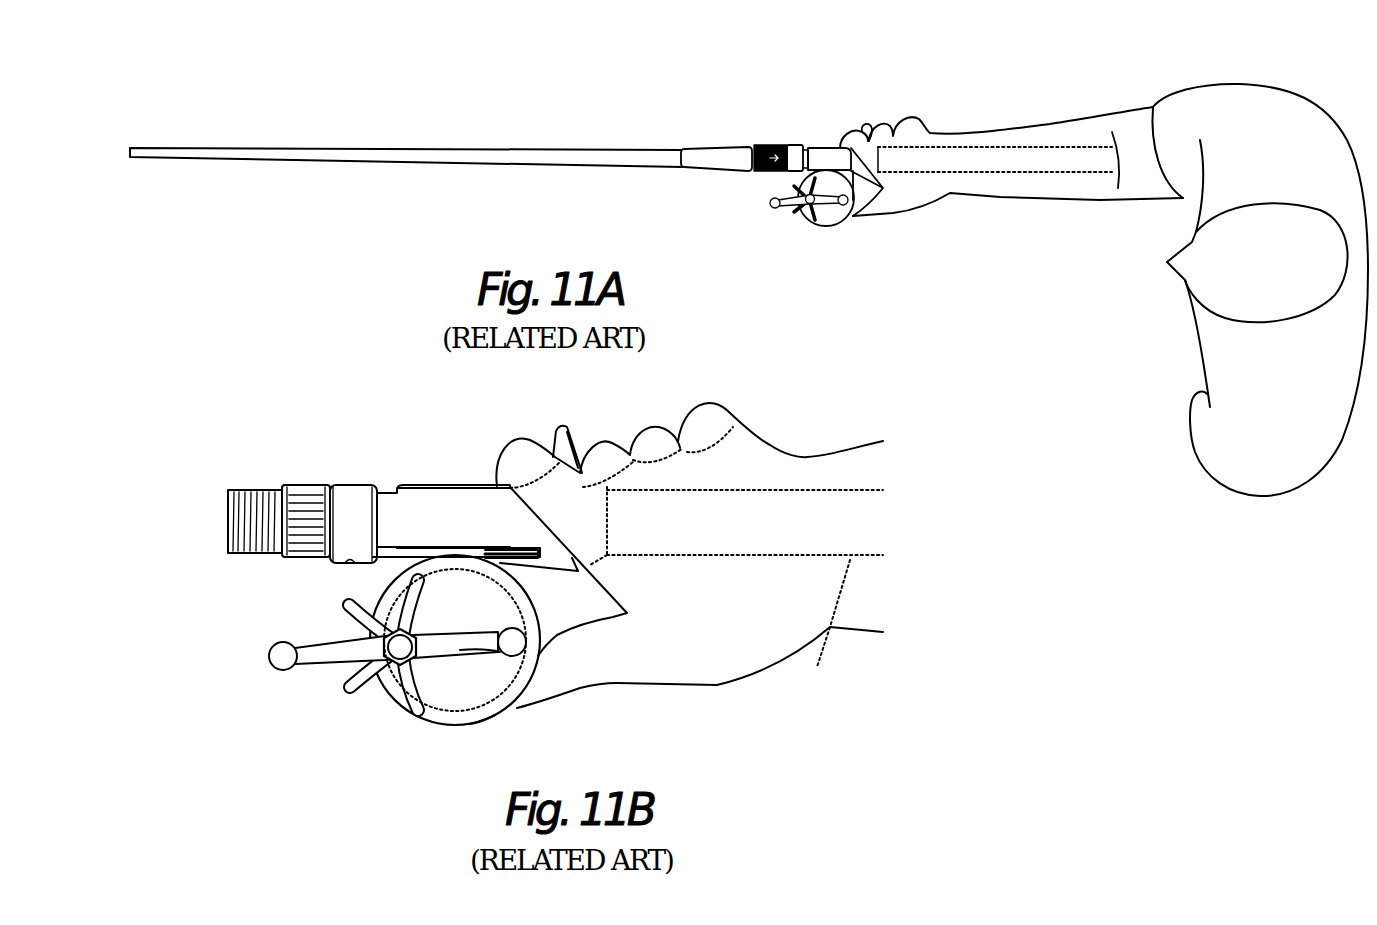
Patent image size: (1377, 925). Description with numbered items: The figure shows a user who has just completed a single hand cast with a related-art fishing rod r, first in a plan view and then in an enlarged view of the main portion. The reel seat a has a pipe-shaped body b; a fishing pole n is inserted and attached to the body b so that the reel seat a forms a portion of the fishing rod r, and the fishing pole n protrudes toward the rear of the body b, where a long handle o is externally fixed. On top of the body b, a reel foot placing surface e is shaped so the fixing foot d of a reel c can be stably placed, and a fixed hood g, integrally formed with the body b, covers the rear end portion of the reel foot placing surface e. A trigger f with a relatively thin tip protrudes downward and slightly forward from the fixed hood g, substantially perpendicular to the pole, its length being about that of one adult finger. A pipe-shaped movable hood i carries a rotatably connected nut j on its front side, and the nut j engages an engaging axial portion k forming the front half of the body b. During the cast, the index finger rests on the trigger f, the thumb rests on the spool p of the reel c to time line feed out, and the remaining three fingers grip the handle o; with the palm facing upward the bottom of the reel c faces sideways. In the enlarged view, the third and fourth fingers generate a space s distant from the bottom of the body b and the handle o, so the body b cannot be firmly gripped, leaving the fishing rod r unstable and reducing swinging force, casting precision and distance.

In FIG. 11A, the fishing rod r is at (567, 108).
In FIG. 11A, the fishing pole n is at (390, 156).
In FIG. 11A, the reel seat a is at (773, 155).
In FIG. 11B, the reel seat a is at (381, 520).
In FIG. 11A, the engaging axial portion k is at (762, 144).
In FIG. 11B, the engaging axial portion k is at (256, 491).
In FIG. 11A, the nut j is at (778, 147).
In FIG. 11B, the nut j is at (304, 486).
In FIG. 11A, the movable hood i is at (794, 147).
In FIG. 11B, the movable hood i is at (350, 487).
In FIG. 11A, the body b is at (823, 147).
In FIG. 11B, the body b is at (432, 492).
In FIG. 11A, the reel c is at (826, 224).
In FIG. 11B, the reel c is at (410, 707).
In FIG. 11A, the fixing foot d is at (865, 210).
In FIG. 11B, the fixing foot d is at (503, 565).
In FIG. 11B, the reel foot placing surface e is at (500, 565).
In FIG. 11A, the trigger f is at (866, 126).
In FIG. 11B, the trigger f is at (569, 429).
In FIG. 11B, the fixed hood g is at (578, 572).
In FIG. 11A, the handle o is at (975, 147).
In FIG. 11B, the handle o is at (689, 555).
In FIG. 11B, the spool p is at (507, 713).
In FIG. 11B, the space s is at (692, 474).